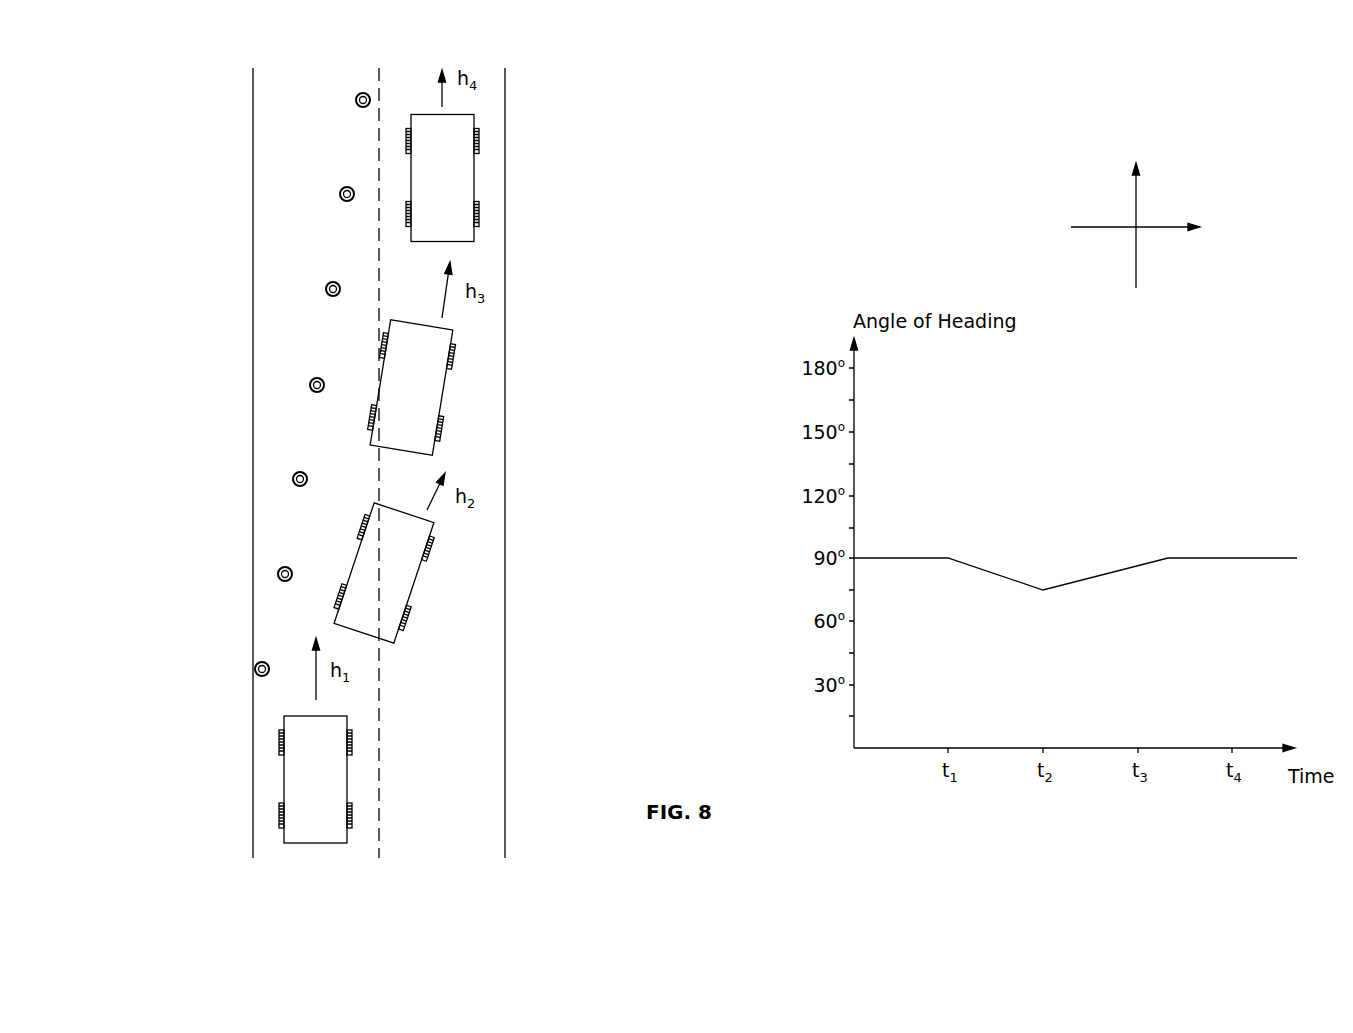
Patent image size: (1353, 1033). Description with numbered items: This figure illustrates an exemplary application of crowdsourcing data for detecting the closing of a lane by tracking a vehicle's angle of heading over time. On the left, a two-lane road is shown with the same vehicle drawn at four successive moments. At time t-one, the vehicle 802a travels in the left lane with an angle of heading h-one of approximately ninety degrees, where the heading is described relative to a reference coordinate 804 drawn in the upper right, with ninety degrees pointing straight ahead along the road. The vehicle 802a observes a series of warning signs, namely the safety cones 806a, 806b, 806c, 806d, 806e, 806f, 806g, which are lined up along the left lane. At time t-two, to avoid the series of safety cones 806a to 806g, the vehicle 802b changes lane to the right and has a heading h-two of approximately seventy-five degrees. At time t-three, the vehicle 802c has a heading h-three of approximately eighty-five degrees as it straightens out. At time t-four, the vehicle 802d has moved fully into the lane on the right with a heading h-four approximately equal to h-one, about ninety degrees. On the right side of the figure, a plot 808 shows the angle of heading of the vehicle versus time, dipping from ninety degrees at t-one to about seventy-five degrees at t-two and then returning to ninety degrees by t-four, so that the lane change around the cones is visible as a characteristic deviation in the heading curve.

The vehicle at time t1 802a is at (347, 780).
The vehicle at time t2 802b is at (417, 580).
The vehicle at time t3 802c is at (445, 385).
The vehicle at time t4 802d is at (474, 176).
The safety cone 806a is at (253, 663).
The safety cone 806b is at (278, 570).
The safety cone 806c is at (292, 474).
The safety cone 806d is at (309, 379).
The safety cone 806e is at (324, 283).
The safety cone 806f is at (338, 188).
The safety cone 806g is at (355, 98).
The reference coordinate 804 is at (1210, 280).
The plot 808 is at (1232, 558).